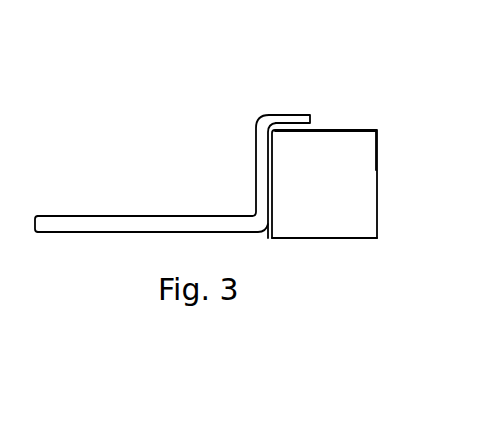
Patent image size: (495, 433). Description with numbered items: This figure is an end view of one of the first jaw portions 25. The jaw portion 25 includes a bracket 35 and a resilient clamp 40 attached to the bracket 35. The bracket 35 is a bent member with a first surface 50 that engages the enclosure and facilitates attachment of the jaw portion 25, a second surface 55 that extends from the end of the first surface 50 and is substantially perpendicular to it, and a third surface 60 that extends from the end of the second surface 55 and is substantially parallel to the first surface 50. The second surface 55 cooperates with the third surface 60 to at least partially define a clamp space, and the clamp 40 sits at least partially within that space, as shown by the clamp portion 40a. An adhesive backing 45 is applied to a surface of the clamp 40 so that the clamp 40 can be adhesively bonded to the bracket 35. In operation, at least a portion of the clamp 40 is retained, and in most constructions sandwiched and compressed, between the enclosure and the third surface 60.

The first jaw portion 25 is at (362, 63).
The bracket 35 is at (90, 224).
The resilient clamp 40 is at (368, 227).
The clamp portion 40a is at (291, 148).
The adhesive backing 45 is at (271, 239).
The first surface 50 is at (120, 215).
The second surface 55 is at (256, 164).
The third surface 60 is at (292, 114).